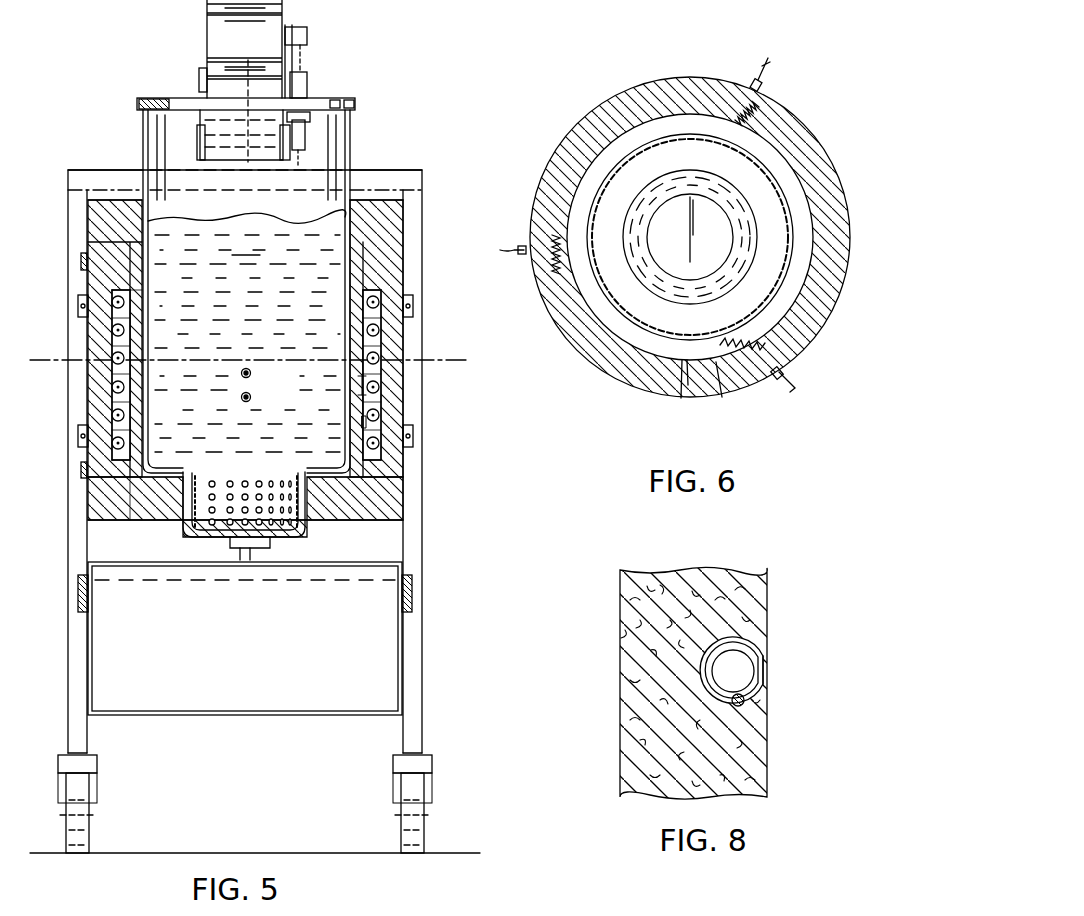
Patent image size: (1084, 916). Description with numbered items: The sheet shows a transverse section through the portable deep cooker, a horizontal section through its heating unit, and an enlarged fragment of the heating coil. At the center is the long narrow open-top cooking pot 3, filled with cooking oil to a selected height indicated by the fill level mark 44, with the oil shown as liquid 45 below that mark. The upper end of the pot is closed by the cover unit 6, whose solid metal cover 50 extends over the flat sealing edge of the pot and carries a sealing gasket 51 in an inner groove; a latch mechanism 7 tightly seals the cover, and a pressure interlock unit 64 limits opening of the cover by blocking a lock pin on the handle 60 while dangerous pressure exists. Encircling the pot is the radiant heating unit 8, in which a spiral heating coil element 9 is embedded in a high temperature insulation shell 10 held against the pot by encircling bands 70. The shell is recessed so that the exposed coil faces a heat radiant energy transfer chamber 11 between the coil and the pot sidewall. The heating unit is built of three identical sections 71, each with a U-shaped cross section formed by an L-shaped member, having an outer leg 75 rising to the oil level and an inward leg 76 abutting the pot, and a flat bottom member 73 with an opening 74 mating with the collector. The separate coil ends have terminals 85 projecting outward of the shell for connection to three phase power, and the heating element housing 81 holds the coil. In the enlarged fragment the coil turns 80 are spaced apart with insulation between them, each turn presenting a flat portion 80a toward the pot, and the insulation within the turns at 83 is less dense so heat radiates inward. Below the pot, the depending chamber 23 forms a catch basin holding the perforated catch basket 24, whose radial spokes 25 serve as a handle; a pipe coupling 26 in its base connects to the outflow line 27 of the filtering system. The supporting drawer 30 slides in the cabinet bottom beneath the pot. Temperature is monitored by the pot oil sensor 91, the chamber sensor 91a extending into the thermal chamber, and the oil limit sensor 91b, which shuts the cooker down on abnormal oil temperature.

In FIG. 6, the cooking pot 3 is at (700, 333).
In FIG. 5, the cover unit 6 is at (43, 358).
In FIG. 5, the latch mechanism 7 is at (130, 258).
In FIG. 5, the radiant heating unit 8 is at (403, 490).
In FIG. 6, the radiant heating unit 8 is at (721, 408).
In FIG. 5, the heating coil element 9 is at (380, 387).
In FIG. 6, the heating coil element 9 is at (553, 258).
In FIG. 5, the insulation shell 10 is at (393, 249).
In FIG. 6, the insulation shell 10 is at (676, 399).
In FIG. 8, the insulation shell 10 is at (625, 720).
In FIG. 6, the heat radiant energy transfer chamber 11 is at (757, 318).
In FIG. 5, the depending chamber 23 is at (258, 548).
In FIG. 6, the depending chamber 23 is at (704, 229).
In FIG. 5, the catch basket 24 is at (249, 486).
In FIG. 5, the radial spokes 25 is at (248, 470).
In FIG. 5, the pipe coupling 26 is at (228, 540).
In FIG. 5, the outflow line 27 is at (240, 560).
In FIG. 5, the supporting drawer 30 is at (309, 715).
In FIG. 5, the fill level mark 44 is at (241, 254).
In FIG. 5, the cooking liquid 45 is at (256, 276).
In FIG. 5, the metal cover 50 is at (160, 98).
In FIG. 5, the sealing gasket 51 is at (140, 104).
In FIG. 5, the handle 60 is at (282, 6).
In FIG. 5, the pressure interlock unit 64 is at (325, 138).
In FIG. 5, the encircling bands 70 is at (80, 262).
In FIG. 6, the heating unit section 71 is at (663, 80).
In FIG. 5, the bottom member 73 is at (100, 515).
In FIG. 5, the opening 74 is at (130, 479).
In FIG. 5, the outer leg 75 is at (100, 380).
In FIG. 5, the inward leg 76 is at (127, 242).
In FIG. 8, the coil turns 80 is at (740, 638).
In FIG. 8, the flat portion 80a is at (765, 668).
In FIG. 5, the heating element housing 81 is at (375, 300).
In FIG. 8, the lower density insulation within coil turns 83 is at (744, 699).
In FIG. 6, the terminals 85 is at (790, 372).
In FIG. 5, the pot oil sensor 91 is at (254, 397).
In FIG. 5, the chamber sensor 91a is at (366, 396).
In FIG. 5, the oil limit sensor 91b is at (254, 373).